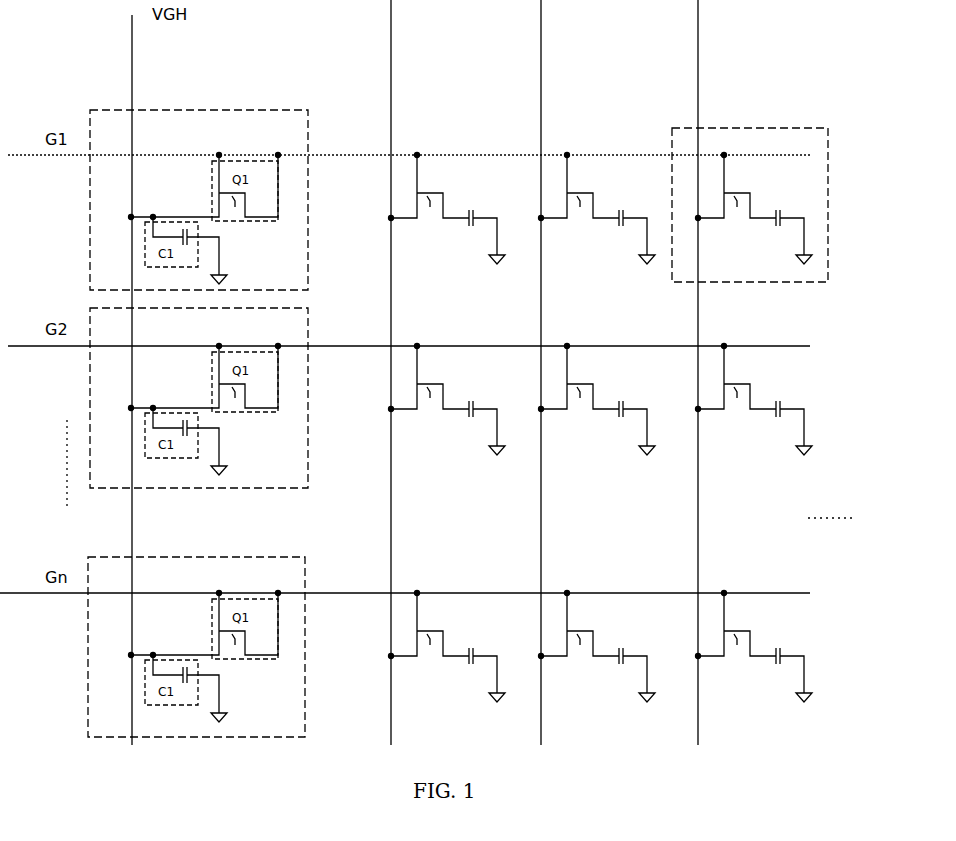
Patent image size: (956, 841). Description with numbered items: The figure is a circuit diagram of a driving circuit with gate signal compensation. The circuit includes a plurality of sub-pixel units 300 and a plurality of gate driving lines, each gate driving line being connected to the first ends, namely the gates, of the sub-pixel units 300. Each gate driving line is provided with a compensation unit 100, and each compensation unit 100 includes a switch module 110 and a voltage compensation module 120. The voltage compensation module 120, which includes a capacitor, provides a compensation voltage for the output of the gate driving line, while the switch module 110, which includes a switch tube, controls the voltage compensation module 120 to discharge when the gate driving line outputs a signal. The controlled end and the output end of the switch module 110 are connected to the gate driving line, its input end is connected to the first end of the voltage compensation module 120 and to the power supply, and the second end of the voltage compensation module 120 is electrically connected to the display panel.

The compensation unit 100 is at (216, 110).
The switch module 110 is at (220, 154).
The voltage compensation module 120 is at (182, 217).
The sub-pixel unit 300 is at (757, 128).